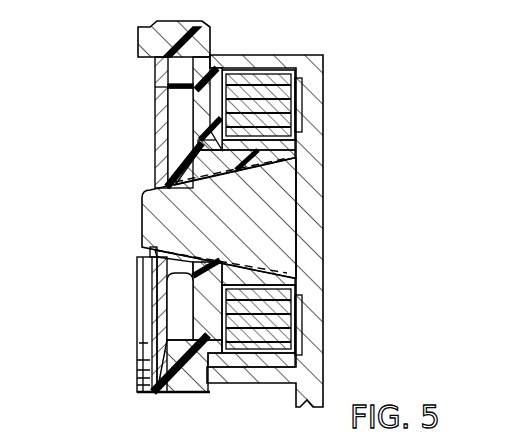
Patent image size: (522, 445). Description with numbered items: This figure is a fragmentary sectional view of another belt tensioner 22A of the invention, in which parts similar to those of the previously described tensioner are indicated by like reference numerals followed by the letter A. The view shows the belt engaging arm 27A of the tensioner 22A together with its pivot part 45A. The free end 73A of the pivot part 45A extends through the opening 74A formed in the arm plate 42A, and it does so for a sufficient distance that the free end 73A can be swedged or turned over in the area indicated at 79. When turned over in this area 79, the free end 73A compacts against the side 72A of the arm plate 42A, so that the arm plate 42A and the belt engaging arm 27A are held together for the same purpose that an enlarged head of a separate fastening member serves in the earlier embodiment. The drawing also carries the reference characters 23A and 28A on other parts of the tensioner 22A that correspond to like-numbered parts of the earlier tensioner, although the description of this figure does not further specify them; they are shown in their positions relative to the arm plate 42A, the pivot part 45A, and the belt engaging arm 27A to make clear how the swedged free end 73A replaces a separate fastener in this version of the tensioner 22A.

The belt tensioner 22A is at (380, 100).
The hub flange 23A is at (138, 42).
The belt engaging arm 27A is at (323, 377).
The coil 28A is at (270, 76).
The arm plate 42A is at (155, 100).
The side of the arm plate 72A is at (158, 128).
The pivot part 45A is at (160, 152).
The swedged area 79 is at (145, 178).
The free end of the pivot part 73A is at (142, 212).
The opening in the arm plate 74A is at (150, 252).